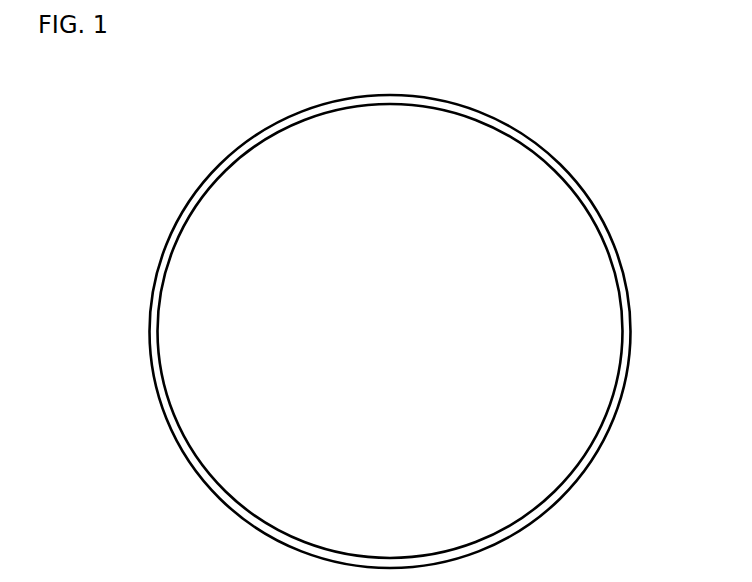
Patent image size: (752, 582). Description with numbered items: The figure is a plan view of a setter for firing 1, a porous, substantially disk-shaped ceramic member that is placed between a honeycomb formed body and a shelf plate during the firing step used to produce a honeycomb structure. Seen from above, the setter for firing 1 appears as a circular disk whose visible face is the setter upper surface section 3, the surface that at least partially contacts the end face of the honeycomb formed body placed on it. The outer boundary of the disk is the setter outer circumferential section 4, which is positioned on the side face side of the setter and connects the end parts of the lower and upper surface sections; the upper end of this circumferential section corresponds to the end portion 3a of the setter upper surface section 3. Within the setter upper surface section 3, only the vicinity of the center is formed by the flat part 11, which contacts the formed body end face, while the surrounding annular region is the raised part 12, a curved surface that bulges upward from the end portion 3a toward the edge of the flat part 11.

The setter for firing 1 is at (159, 125).
The setter upper surface section 3 is at (542, 187).
The end portion of the setter upper surface section 3a is at (428, 331).
The setter outer circumferential section 4 is at (616, 254).
The flat part 11 is at (412, 331).
The raised part 12 is at (587, 423).